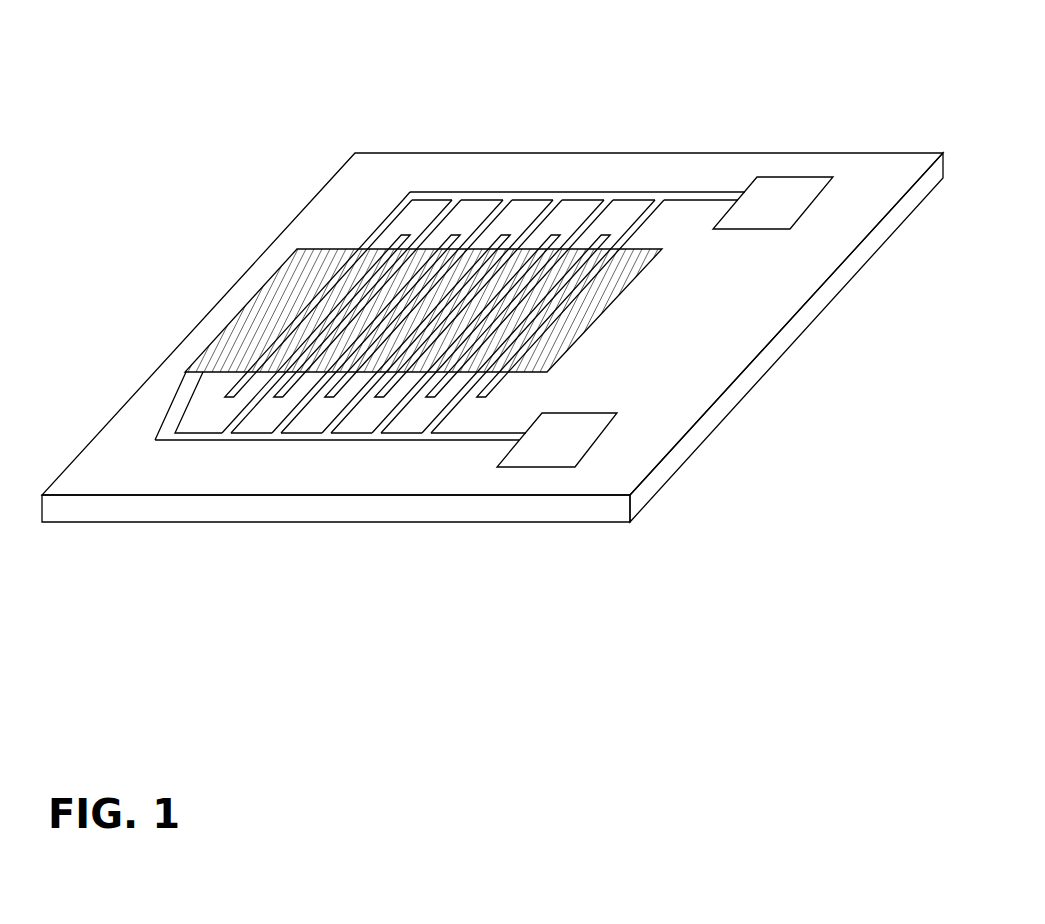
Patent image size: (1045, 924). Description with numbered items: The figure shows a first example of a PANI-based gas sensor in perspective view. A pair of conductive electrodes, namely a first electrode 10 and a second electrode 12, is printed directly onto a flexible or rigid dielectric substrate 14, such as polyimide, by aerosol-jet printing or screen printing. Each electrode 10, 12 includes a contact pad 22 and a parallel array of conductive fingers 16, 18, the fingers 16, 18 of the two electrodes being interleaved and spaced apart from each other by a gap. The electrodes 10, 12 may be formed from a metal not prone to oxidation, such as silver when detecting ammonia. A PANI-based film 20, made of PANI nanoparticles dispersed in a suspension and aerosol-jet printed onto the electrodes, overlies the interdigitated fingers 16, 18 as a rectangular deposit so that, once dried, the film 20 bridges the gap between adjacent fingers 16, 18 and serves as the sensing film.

The first electrode 10 is at (300, 433).
The second electrode 12 is at (485, 219).
The dielectric substrate 14 is at (683, 465).
The fingers 16 is at (283, 415).
The fingers 18 is at (483, 223).
The PANI-based film 20 is at (238, 330).
The contact pad 22 is at (590, 420).